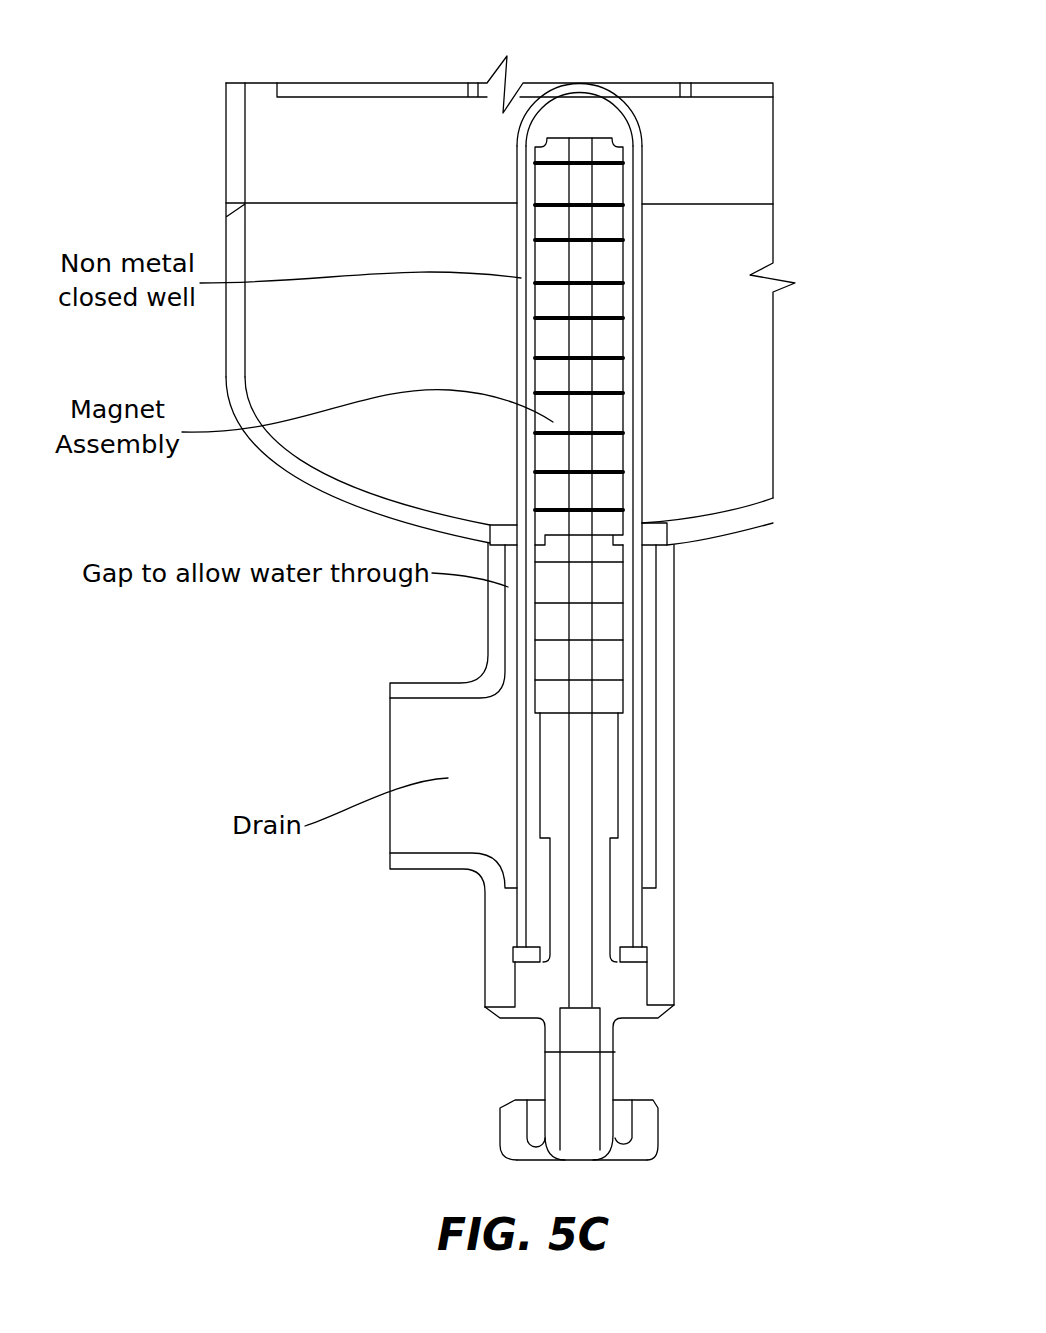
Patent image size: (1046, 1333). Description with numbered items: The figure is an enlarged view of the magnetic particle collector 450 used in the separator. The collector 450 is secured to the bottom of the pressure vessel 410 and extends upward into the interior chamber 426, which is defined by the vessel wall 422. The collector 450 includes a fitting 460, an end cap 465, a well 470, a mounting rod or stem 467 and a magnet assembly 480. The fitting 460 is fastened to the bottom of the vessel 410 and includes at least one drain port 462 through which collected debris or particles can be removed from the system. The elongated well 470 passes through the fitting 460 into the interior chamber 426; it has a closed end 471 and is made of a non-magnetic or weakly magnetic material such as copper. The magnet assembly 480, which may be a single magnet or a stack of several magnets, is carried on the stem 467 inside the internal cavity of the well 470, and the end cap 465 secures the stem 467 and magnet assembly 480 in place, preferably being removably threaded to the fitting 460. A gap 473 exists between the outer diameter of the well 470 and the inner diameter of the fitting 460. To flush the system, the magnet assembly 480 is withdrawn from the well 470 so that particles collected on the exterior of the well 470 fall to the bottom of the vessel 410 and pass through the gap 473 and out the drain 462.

The pressure vessel 410 is at (267, 458).
The vessel wall 422 is at (343, 480).
The interior chamber 426 is at (437, 153).
The magnetic particle collector 450 is at (688, 592).
The fitting 460 is at (675, 807).
The drain port 462 is at (388, 724).
The end cap 465 is at (658, 1127).
The mounting rod or stem 467 is at (567, 972).
The well 470 is at (643, 352).
The closed end 471 is at (602, 88).
The gap 473 is at (508, 613).
The magnet assembly 480 is at (315, 95).